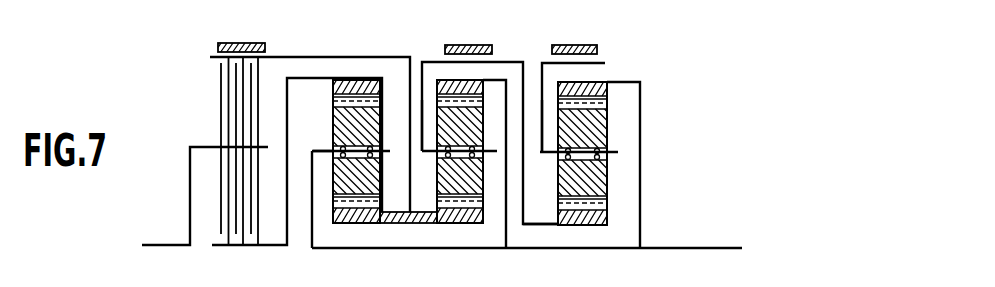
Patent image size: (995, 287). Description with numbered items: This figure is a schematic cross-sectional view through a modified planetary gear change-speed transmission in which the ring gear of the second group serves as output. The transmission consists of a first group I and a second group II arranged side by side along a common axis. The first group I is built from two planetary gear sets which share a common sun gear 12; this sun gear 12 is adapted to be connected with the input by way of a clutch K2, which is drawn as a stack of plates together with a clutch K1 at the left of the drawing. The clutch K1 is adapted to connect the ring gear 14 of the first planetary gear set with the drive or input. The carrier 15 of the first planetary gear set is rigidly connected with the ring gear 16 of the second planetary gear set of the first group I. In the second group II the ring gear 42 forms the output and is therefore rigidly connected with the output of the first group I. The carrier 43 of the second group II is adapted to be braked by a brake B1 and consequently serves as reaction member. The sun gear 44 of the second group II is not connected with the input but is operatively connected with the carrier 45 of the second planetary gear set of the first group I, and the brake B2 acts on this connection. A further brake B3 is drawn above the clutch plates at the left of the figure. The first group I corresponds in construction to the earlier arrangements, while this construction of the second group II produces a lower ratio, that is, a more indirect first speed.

The common sun gear 12 is at (417, 223).
The ring gear 14 is at (347, 80).
The carrier 15 is at (322, 150).
The ring gear 16 is at (429, 84).
The ring gear 42 is at (597, 81).
The carrier 43 is at (542, 153).
The sun gear 44 is at (592, 228).
The carrier 45 is at (427, 152).
The clutch K1 is at (240, 200).
The clutch K2 is at (243, 106).
The brake B1 is at (587, 45).
The brake B2 is at (482, 45).
The brake B3 is at (253, 42).
The first group I is at (445, 84).
The second group II is at (619, 146).